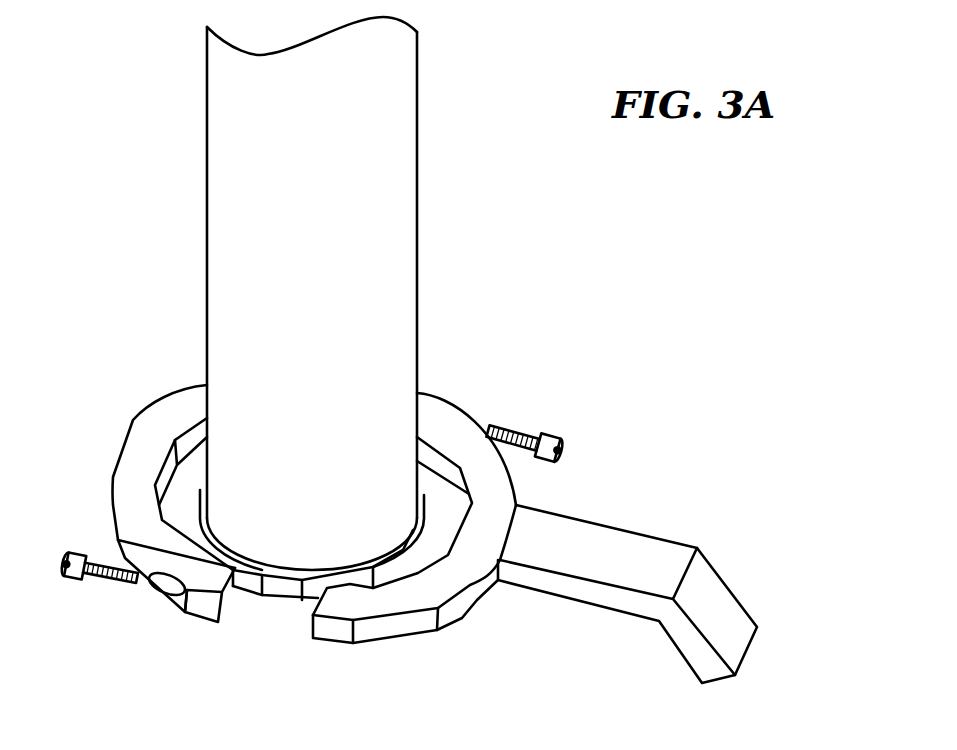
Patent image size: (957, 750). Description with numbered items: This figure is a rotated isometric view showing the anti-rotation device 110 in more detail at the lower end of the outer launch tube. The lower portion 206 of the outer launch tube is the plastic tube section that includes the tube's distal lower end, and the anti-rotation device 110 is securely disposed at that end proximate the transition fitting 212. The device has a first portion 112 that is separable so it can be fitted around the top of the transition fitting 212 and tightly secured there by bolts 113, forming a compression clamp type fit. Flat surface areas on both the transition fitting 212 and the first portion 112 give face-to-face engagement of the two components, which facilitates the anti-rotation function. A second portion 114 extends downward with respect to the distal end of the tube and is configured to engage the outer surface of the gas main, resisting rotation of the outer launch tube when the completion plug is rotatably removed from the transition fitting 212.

The anti-rotation device 110 is at (387, 540).
The first portion 112 is at (335, 638).
The bolts 113 is at (530, 433).
The second portion 114 is at (628, 558).
The lower portion 206 is at (235, 241).
The transition fitting 212 is at (203, 517).